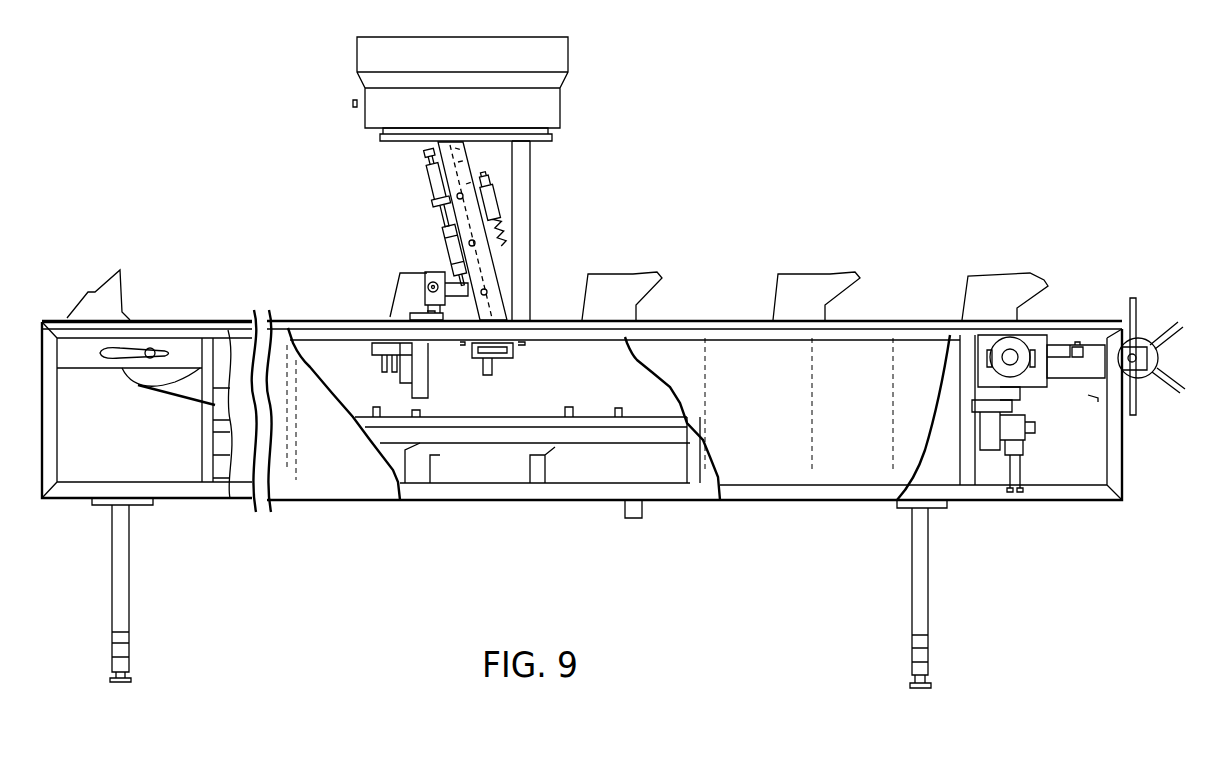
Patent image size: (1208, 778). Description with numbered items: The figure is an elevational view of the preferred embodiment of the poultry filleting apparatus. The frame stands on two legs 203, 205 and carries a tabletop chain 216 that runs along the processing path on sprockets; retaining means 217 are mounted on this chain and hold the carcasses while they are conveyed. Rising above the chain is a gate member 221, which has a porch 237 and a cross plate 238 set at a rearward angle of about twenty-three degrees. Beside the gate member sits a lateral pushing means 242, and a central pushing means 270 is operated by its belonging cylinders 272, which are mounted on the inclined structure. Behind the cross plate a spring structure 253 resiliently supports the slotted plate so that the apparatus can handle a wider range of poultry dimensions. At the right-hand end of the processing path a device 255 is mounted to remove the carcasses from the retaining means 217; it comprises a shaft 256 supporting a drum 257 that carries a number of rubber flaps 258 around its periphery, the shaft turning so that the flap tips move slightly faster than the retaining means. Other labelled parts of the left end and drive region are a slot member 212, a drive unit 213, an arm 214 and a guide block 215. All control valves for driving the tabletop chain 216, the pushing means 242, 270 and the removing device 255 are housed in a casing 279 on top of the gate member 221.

The leg 203 is at (122, 589).
The leg 205 is at (917, 600).
The drive pulley slot 212 is at (153, 349).
The drive motor 213 is at (1012, 357).
The idler arm 214 is at (141, 377).
The guide block 215 is at (1045, 284).
The tabletop chain 216 is at (883, 321).
The retaining means 217 is at (619, 302).
The gate member 221 is at (543, 206).
The inclined bar 237 is at (520, 258).
The slot 238 is at (498, 277).
The lateral pushing means 242 is at (432, 271).
The spring structure 253 is at (493, 235).
The device for removing carcasses 255 is at (1157, 306).
The shaft 256 is at (1130, 355).
The drum 257 is at (1146, 377).
The rubber flaps 258 is at (1130, 302).
The central pushing means 270 is at (448, 253).
The cylinders 272 is at (432, 175).
The casing 279 is at (541, 110).